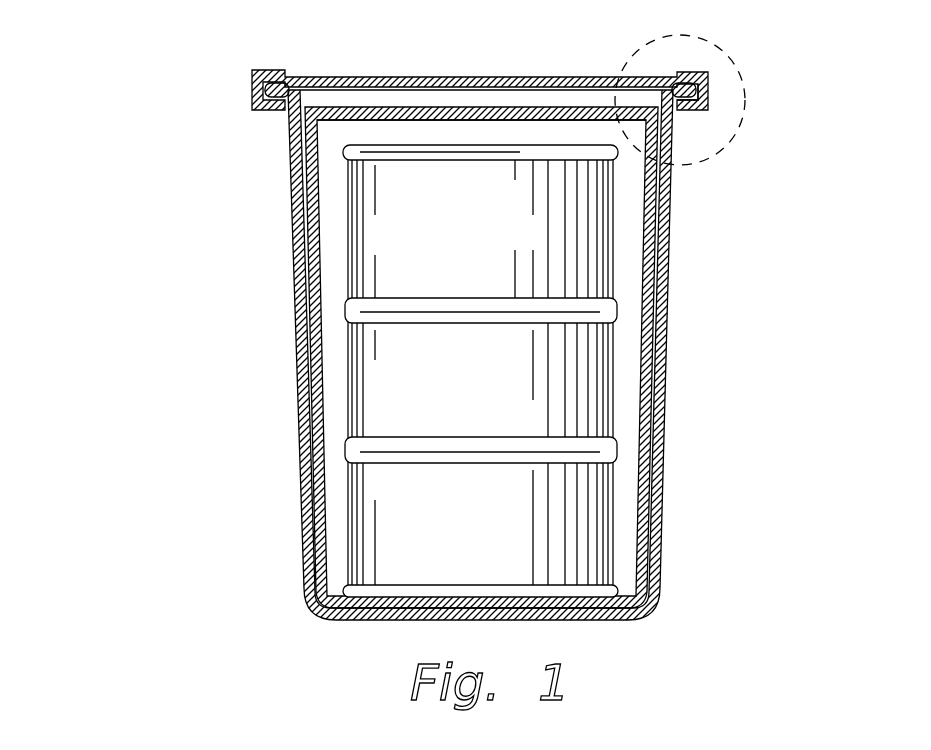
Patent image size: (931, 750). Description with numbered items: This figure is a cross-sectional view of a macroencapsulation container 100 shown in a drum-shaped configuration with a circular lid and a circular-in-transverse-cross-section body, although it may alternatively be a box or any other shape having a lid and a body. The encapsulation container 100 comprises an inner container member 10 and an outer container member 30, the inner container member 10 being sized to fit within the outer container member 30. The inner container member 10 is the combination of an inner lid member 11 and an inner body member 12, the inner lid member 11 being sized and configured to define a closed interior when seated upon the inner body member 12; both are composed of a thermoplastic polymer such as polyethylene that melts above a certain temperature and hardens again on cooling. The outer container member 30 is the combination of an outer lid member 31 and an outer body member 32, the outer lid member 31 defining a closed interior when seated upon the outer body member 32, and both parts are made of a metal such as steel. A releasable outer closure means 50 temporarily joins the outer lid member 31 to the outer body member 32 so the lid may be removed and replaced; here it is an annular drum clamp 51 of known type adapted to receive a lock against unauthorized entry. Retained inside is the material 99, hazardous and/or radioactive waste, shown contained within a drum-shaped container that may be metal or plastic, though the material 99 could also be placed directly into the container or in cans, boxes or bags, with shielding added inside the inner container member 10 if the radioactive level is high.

The macroencapsulation container 100 is at (200, 318).
The inner container member 10 is at (345, 128).
The inner lid member 11 is at (403, 109).
The inner body member 12 is at (308, 248).
The outer container member 30 is at (300, 60).
The outer lid member 31 is at (363, 77).
The outer body member 32 is at (302, 483).
The outer closure means 50 is at (725, 82).
The annular drum clamp 51 is at (708, 97).
The material 99 is at (410, 400).